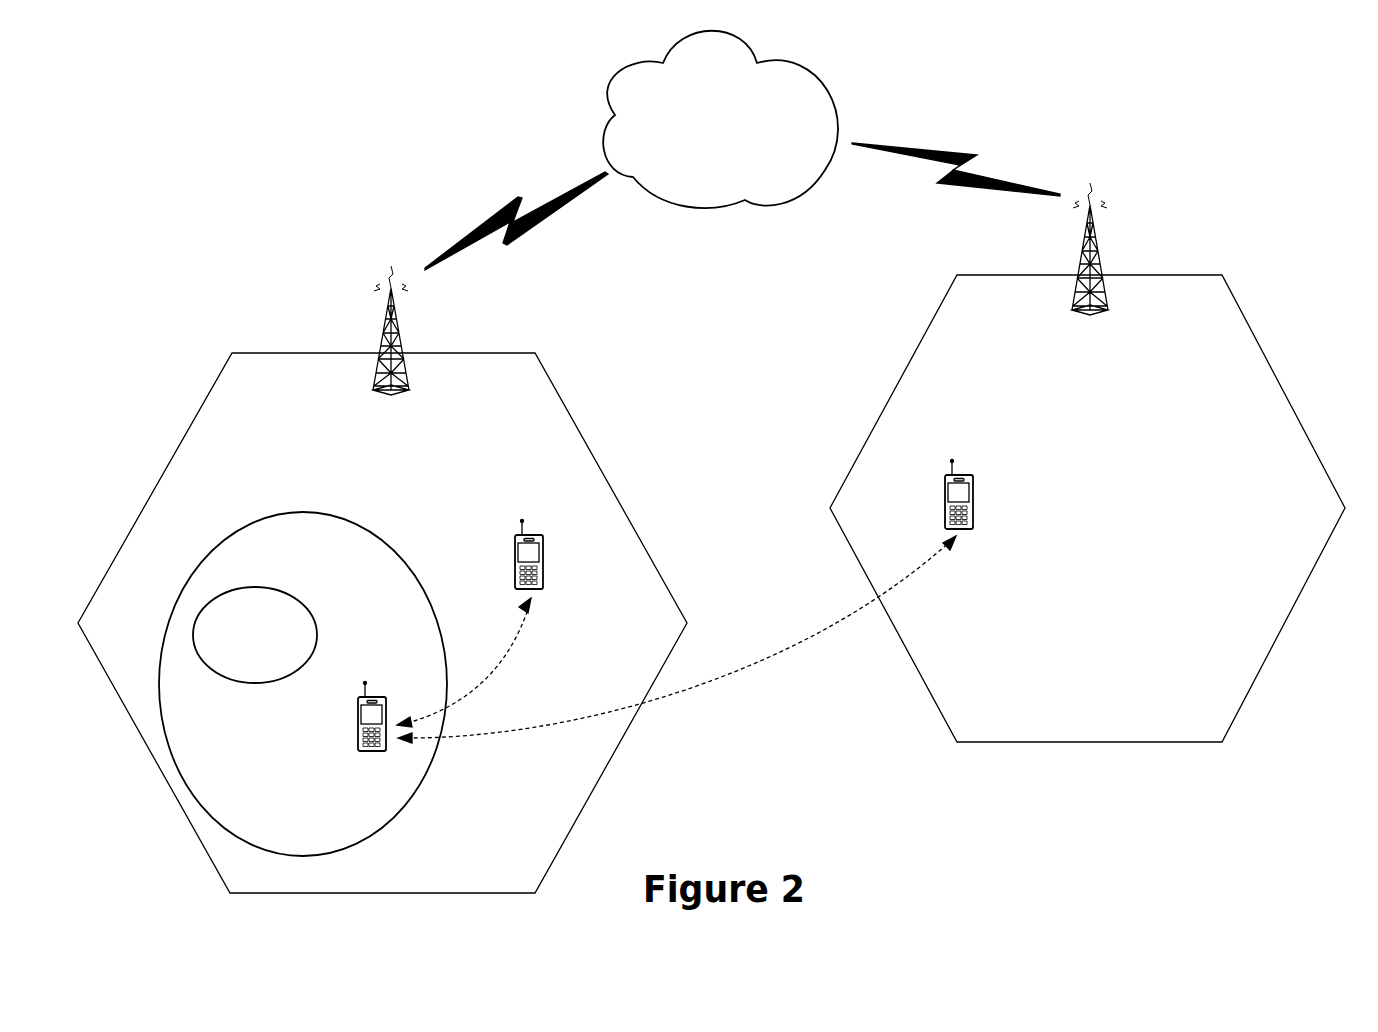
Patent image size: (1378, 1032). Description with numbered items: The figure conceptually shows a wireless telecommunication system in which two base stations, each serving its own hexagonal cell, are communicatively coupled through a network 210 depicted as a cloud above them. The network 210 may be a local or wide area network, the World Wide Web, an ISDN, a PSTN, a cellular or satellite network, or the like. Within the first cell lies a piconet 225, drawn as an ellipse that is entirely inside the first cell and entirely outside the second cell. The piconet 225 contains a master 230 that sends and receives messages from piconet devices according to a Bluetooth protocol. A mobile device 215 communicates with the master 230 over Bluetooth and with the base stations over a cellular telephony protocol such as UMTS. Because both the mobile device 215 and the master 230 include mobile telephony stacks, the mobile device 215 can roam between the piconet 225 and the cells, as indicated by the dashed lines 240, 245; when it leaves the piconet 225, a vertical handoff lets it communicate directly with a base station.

The network 210 is at (720, 119).
The mobile device 215 is at (513, 558).
The piconet 225 is at (252, 850).
The master 230 is at (255, 635).
The dashed line 240 is at (490, 683).
The dashed line 245 is at (708, 693).